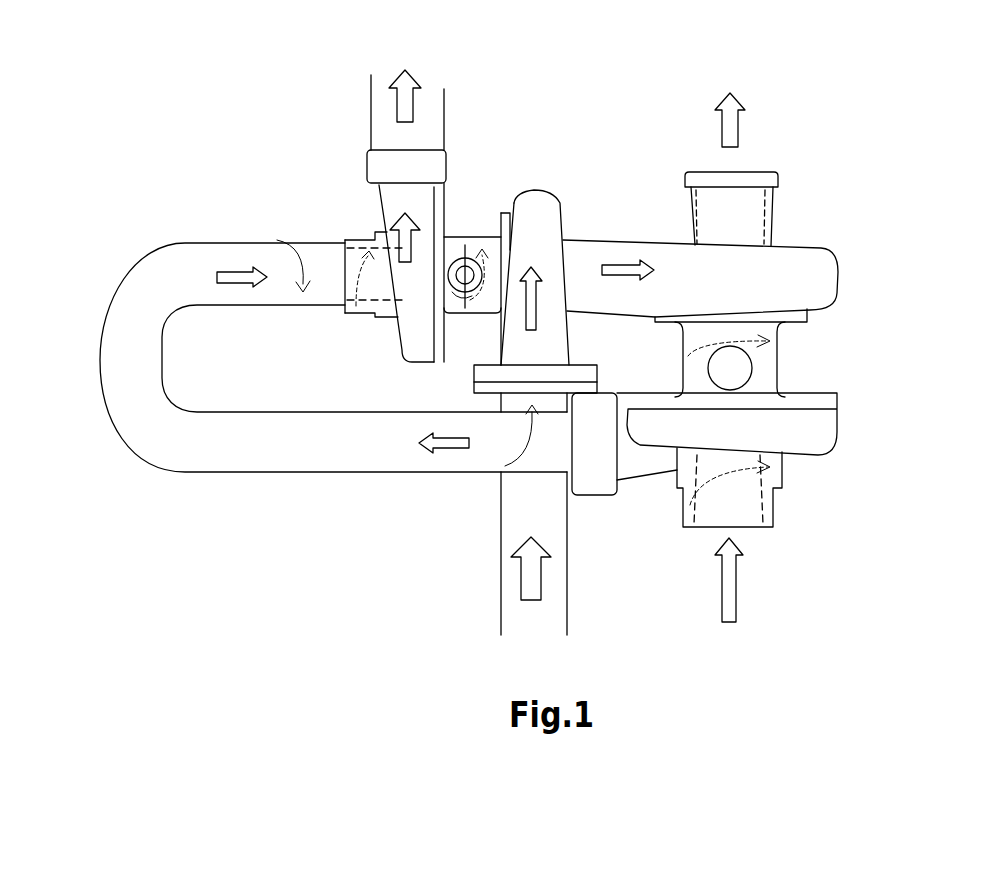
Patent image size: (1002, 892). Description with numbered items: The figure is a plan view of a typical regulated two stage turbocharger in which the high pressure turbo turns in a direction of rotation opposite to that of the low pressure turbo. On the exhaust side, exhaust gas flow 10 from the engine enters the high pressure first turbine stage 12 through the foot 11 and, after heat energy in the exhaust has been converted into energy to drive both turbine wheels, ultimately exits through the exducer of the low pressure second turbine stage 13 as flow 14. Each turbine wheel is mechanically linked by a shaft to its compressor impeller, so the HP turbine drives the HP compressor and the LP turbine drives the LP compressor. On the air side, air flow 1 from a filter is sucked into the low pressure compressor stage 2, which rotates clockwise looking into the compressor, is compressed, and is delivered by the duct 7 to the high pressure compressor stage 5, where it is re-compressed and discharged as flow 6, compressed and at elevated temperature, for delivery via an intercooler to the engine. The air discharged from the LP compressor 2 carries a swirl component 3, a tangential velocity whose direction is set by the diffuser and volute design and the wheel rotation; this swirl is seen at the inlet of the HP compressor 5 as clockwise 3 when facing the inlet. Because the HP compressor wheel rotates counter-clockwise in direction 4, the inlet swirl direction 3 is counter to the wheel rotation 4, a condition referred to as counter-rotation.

The air flow 1 is at (735, 568).
The low pressure compressor stage 2 is at (773, 435).
The swirl component 3 is at (287, 263).
The direction of rotation of the HP compressor wheel 4 is at (367, 265).
The high pressure compressor stage 5 is at (401, 173).
The discharge flow 6 is at (401, 100).
The duct 7 is at (137, 378).
The exhaust gas flow 10 is at (531, 577).
The foot 11 is at (481, 383).
The first turbine stage 12 is at (541, 203).
The second turbine stage 13 is at (826, 280).
The exhaust outlet flow 14 is at (725, 123).